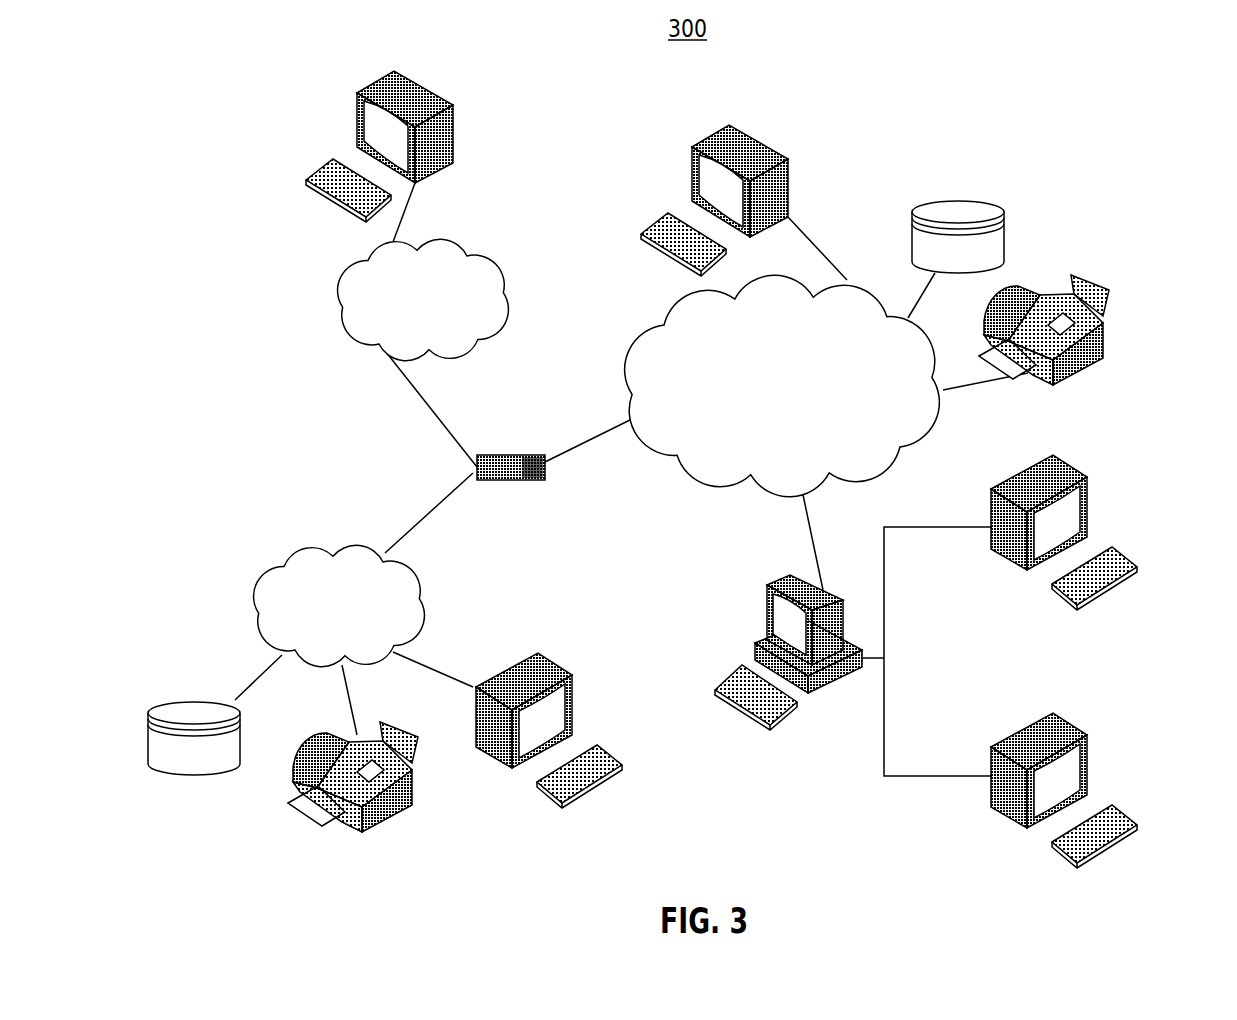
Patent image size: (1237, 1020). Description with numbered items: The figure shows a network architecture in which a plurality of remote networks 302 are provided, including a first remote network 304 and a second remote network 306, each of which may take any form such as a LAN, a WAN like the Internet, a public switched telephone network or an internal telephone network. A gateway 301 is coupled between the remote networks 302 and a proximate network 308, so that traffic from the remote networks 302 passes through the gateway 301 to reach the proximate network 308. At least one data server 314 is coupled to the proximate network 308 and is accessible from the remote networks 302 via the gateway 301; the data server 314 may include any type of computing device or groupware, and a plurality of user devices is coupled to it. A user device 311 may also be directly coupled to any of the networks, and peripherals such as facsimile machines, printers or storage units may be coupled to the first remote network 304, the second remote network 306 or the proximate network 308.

The gateway 301 is at (507, 455).
The remote networks 302 is at (322, 380).
The first remote network 304 is at (257, 580).
The second remote network 306 is at (512, 301).
The proximate network 308 is at (910, 447).
The user device 311 is at (792, 193).
The data server 314 is at (762, 607).